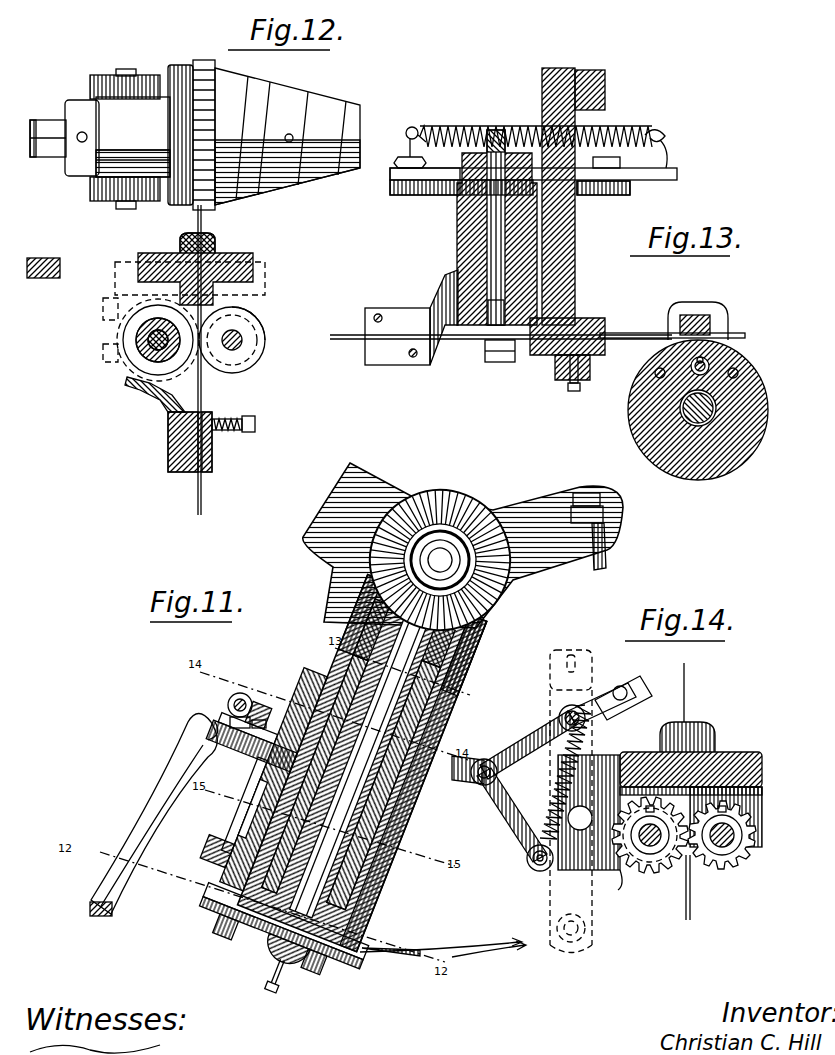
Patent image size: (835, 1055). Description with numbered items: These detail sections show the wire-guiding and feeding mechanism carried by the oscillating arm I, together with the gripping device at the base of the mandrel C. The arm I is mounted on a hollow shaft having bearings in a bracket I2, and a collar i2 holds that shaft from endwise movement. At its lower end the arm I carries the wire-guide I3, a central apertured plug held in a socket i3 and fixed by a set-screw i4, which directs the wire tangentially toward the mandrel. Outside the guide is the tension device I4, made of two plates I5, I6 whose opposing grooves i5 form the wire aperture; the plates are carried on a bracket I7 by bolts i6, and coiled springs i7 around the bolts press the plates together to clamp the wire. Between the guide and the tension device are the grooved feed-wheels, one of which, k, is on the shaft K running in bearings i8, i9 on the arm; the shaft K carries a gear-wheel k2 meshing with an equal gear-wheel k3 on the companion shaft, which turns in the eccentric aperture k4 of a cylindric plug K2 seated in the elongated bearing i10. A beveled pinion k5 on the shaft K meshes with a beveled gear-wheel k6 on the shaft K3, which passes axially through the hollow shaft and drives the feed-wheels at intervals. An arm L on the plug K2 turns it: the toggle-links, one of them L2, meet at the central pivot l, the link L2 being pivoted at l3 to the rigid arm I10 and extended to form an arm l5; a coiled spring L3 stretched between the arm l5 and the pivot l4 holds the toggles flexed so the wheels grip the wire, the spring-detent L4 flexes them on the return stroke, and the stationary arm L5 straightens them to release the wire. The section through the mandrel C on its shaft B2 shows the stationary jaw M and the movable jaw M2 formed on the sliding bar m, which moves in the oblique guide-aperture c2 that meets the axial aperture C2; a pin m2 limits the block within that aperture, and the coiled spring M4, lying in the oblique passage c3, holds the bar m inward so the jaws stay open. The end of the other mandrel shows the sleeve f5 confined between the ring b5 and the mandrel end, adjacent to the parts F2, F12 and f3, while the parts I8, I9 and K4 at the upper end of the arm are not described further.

In FIG. 12, the shaft B2 is at (50, 128).
In FIG. 13, the shaft B2 is at (682, 410).
In FIG. 12, the ring b5 is at (77, 104).
In FIG. 12, the sleeve f5 is at (133, 137).
In FIG. 12, the upper bearing cap F2 is at (108, 80).
In FIG. 12, the lower bearing cap F12 is at (113, 195).
In FIG. 12, the cap screw f3 is at (128, 70).
In FIG. 12, the stationary jaw M is at (205, 78).
In FIG. 13, the stationary jaw M is at (700, 304).
In FIG. 12, the movable jaw M2 is at (182, 72).
In FIG. 13, the movable jaw M2 is at (676, 328).
In FIG. 13, the coiled spring M4 is at (691, 366).
In FIG. 12, the mandrel C is at (274, 102).
In FIG. 13, the axial aperture C2 is at (748, 428).
In FIG. 13, the guide-aperture c2 is at (738, 377).
In FIG. 13, the oblique passage c3 is at (656, 376).
In FIG. 12, the pin m2 is at (295, 138).
In FIG. 13, the sliding bar m is at (710, 356).
In FIG. 12, the socket i3 is at (195, 248).
In FIG. 13, the socket i3 is at (586, 370).
In FIG. 11, the socket i3 is at (259, 965).
In FIG. 13, the set-screw i4 is at (568, 387).
In FIG. 11, the set-screw i4 is at (264, 1001).
In FIG. 13, the grooves i5 is at (362, 337).
In FIG. 12, the bolts i6 is at (248, 416).
In FIG. 13, the bolts i6 is at (413, 350).
In FIG. 12, the coiled springs i7 is at (226, 419).
In FIG. 11, the bearing i8 is at (426, 788).
In FIG. 14, the bearing i8 is at (760, 799).
In FIG. 11, the bearing i9 is at (396, 768).
In FIG. 13, the elongated bearing i10 is at (470, 250).
In FIG. 11, the elongated bearing i10 is at (223, 797).
In FIG. 14, the elongated bearing i10 is at (625, 816).
In FIG. 14, the collar i2 is at (504, 790).
In FIG. 12, the oscillating arm I is at (240, 262).
In FIG. 13, the oscillating arm I is at (542, 86).
In FIG. 11, the oscillating arm I is at (371, 766).
In FIG. 14, the oscillating arm I is at (762, 762).
In FIG. 13, the bracket I2 is at (605, 84).
In FIG. 12, the wire-guide I3 is at (212, 242).
In FIG. 13, the wire-guide I3 is at (600, 338).
In FIG. 11, the wire-guide I3 is at (256, 841).
In FIG. 14, the wire-guide I3 is at (700, 720).
In FIG. 12, the tension device I4 is at (168, 430).
In FIG. 12, the plate I5 is at (190, 474).
In FIG. 12, the plate I6 is at (214, 468).
In FIG. 12, the arm or bracket I7 is at (147, 392).
In FIG. 13, the arm or bracket I7 is at (441, 302).
In FIG. 11, the arm or bracket I7 is at (200, 843).
In FIG. 11, the bracket I8 is at (362, 498).
In FIG. 11, the bracket arm I9 is at (562, 520).
In FIG. 13, the rigid arm I10 is at (606, 197).
In FIG. 11, the rigid arm I10 is at (240, 748).
In FIG. 14, the rigid arm I10 is at (612, 760).
In FIG. 12, the shaft K is at (146, 335).
In FIG. 11, the shaft K is at (372, 779).
In FIG. 14, the shaft K is at (724, 850).
In FIG. 12, the cylindric plug K2 is at (168, 376).
In FIG. 13, the cylindric plug K2 is at (462, 212).
In FIG. 11, the cylindric plug K2 is at (239, 766).
In FIG. 14, the cylindric plug K2 is at (646, 870).
In FIG. 11, the shaft K3 is at (444, 549).
In FIG. 11, the carrier plate K4 is at (215, 794).
In FIG. 12, the grooved wheel k is at (258, 324).
In FIG. 11, the grooved wheel k is at (313, 976).
In FIG. 12, the gear-wheel k2 is at (142, 358).
In FIG. 13, the gear-wheel k2 is at (482, 348).
In FIG. 11, the gear-wheel k2 is at (297, 841).
In FIG. 14, the gear-wheel k2 is at (747, 826).
In FIG. 13, the gear-wheel k3 is at (450, 163).
In FIG. 11, the gear-wheel k3 is at (262, 704).
In FIG. 14, the gear-wheel k3 is at (668, 876).
In FIG. 12, the eccentric bearing-aperture k4 is at (150, 326).
In FIG. 13, the eccentric bearing-aperture k4 is at (470, 265).
In FIG. 11, the beveled gear-pinion k5 is at (405, 643).
In FIG. 11, the beveled gear-wheel k6 is at (408, 633).
In FIG. 13, the arm L is at (432, 190).
In FIG. 11, the arm L is at (214, 726).
In FIG. 14, the arm L is at (612, 882).
In FIG. 13, the toggle-link L2 is at (404, 180).
In FIG. 11, the toggle-link L2 is at (227, 719).
In FIG. 14, the toggle-link L2 is at (526, 738).
In FIG. 13, the coiled spring L3 is at (512, 133).
In FIG. 14, the coiled spring L3 is at (564, 772).
In FIG. 14, the spring-detent L4 is at (512, 830).
In FIG. 12, the stationary arm L5 is at (48, 258).
In FIG. 11, the stationary arm L5 is at (180, 760).
In FIG. 14, the stationary arm L5 is at (571, 801).
In FIG. 14, the central pivot l is at (470, 772).
In FIG. 13, the pivot l3 is at (642, 130).
In FIG. 11, the pivot l3 is at (259, 715).
In FIG. 14, the pivot l3 is at (560, 712).
In FIG. 13, the pivot l4 is at (410, 127).
In FIG. 14, the pivot l4 is at (534, 868).
In FIG. 13, the arm l5 is at (668, 153).
In FIG. 14, the arm l5 is at (620, 684).